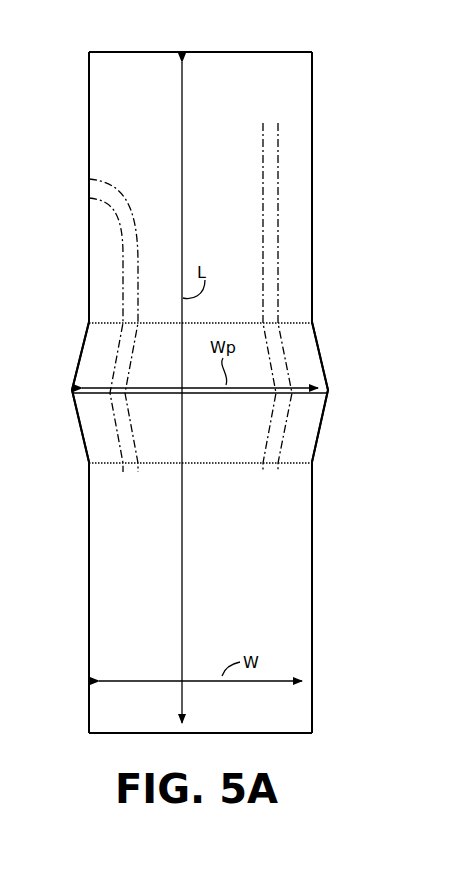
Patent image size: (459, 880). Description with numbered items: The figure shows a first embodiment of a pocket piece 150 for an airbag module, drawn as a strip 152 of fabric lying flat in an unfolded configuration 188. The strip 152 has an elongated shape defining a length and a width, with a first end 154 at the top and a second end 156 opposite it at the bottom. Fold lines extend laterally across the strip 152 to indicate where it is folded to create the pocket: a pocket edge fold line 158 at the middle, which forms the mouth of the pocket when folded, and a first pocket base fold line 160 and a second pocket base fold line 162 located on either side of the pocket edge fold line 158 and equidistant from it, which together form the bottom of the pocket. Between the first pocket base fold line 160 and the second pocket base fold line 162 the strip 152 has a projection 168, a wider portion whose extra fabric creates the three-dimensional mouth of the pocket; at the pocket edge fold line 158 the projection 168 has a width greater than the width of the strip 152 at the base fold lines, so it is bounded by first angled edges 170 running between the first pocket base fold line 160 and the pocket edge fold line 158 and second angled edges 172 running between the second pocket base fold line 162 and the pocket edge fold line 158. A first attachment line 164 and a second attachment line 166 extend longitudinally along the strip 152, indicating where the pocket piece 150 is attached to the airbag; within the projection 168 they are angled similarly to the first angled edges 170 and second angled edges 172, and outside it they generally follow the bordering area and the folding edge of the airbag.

The pocket piece 150 is at (120, 138).
The strip 152 is at (274, 52).
The first end 154 is at (192, 52).
The second end 156 is at (288, 734).
The pocket edge fold line 158 is at (318, 382).
The first pocket base fold line 160 is at (312, 310).
The second pocket base fold line 162 is at (292, 463).
The first attachment line 164 is at (120, 262).
The second attachment line 166 is at (277, 257).
The projection 168 is at (340, 392).
The first angled edges 170 is at (80, 354).
The second angled edges 172 is at (80, 437).
The unfolded configuration 188 is at (312, 66).